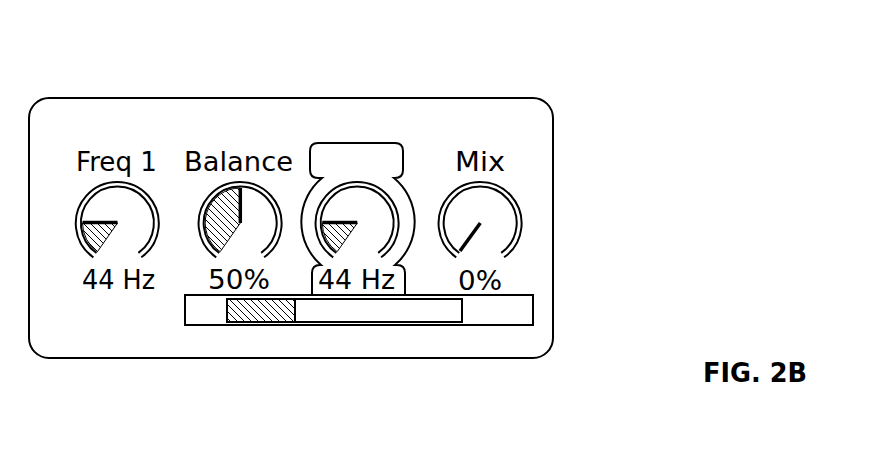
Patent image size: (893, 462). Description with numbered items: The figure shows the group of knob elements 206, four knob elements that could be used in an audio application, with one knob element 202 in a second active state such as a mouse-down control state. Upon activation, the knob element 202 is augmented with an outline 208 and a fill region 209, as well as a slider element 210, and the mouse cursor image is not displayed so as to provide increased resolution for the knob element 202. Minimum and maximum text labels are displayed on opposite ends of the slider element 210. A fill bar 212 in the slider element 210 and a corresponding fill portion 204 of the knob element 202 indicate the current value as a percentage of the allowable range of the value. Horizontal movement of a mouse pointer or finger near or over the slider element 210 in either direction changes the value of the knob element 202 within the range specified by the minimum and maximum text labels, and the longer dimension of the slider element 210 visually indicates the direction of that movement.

The knob element 202 is at (407, 212).
The fill portion 204 is at (354, 237).
The group of knob elements 206 is at (553, 150).
The outline 208 is at (370, 146).
The fill region 209 is at (341, 146).
The slider element 210 is at (533, 308).
The fill bar 212 is at (241, 325).